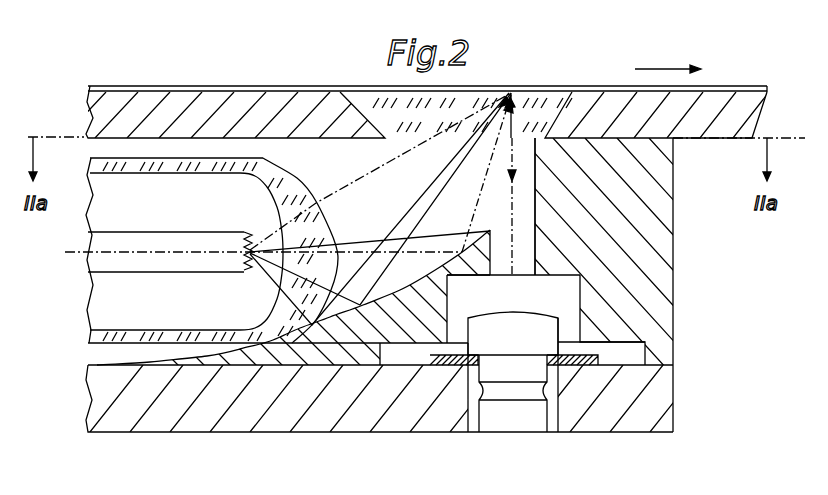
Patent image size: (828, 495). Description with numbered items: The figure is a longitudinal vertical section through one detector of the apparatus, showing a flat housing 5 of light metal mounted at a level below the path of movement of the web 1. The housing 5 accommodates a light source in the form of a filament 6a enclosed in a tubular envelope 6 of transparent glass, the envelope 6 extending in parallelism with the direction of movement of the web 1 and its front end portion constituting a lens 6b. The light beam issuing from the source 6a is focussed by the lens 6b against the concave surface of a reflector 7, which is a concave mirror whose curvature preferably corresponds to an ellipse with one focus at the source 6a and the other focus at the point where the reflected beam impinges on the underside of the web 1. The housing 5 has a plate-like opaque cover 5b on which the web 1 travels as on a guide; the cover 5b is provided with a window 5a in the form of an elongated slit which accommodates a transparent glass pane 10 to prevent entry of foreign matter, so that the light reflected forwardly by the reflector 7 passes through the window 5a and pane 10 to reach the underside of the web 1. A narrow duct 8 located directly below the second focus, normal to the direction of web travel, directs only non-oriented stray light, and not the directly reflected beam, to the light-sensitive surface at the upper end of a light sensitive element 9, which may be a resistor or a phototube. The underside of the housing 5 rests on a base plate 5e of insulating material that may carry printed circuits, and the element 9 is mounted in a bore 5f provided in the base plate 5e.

The web 1 is at (312, 92).
The housing 5 is at (680, 245).
The window 5a is at (565, 102).
The cover 5b is at (193, 108).
The base plate 5e is at (395, 420).
The bore 5f is at (463, 418).
The tubular envelope 6 is at (110, 158).
The light source 6a is at (242, 232).
The lens 6b is at (308, 182).
The reflector 7 is at (293, 342).
The duct 8 is at (537, 246).
The light sensitive element 9 is at (547, 332).
The glass pane 10 is at (553, 99).